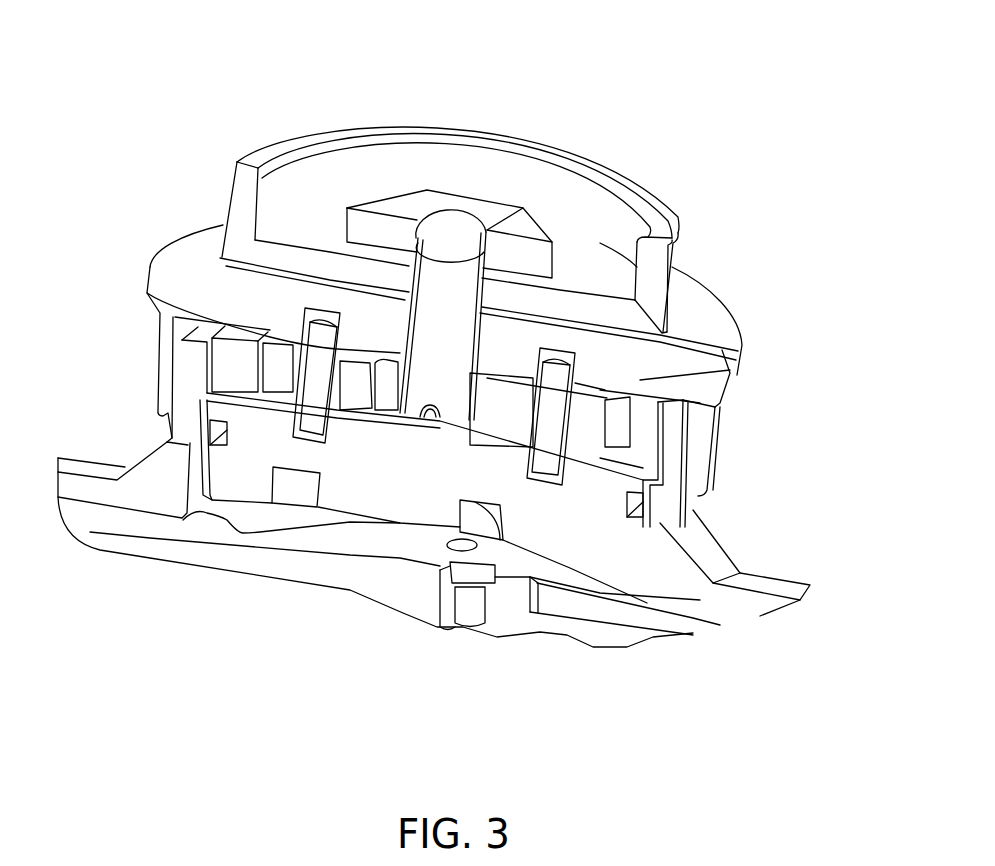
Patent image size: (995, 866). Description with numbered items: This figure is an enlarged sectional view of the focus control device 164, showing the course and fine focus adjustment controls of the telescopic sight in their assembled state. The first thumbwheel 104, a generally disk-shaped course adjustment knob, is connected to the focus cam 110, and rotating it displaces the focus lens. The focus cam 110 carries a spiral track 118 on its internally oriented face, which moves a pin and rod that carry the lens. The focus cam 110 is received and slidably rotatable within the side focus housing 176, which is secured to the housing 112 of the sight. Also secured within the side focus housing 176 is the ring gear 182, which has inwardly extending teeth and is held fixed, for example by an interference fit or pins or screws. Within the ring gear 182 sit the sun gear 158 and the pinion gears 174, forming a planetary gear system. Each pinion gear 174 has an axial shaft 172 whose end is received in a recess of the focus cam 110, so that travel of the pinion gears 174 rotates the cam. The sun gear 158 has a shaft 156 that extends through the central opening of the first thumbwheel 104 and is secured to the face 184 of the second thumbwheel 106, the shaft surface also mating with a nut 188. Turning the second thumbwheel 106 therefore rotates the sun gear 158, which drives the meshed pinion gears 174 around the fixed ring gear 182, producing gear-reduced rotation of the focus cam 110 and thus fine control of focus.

The focus control device 164 is at (163, 86).
The first thumbwheel 104 is at (763, 317).
The second thumbwheel 106 is at (693, 173).
The face 184 is at (597, 267).
The nut 188 is at (503, 222).
The shaft 156 is at (440, 260).
The axial shaft 172 is at (313, 363).
The pinion gears 174 is at (278, 378).
The ring gear 182 is at (220, 373).
The side focus housing 176 is at (675, 507).
The spiral track 118 is at (302, 498).
The sun gear 158 is at (388, 392).
The focus cam 110 is at (607, 537).
The housing 112 is at (730, 573).